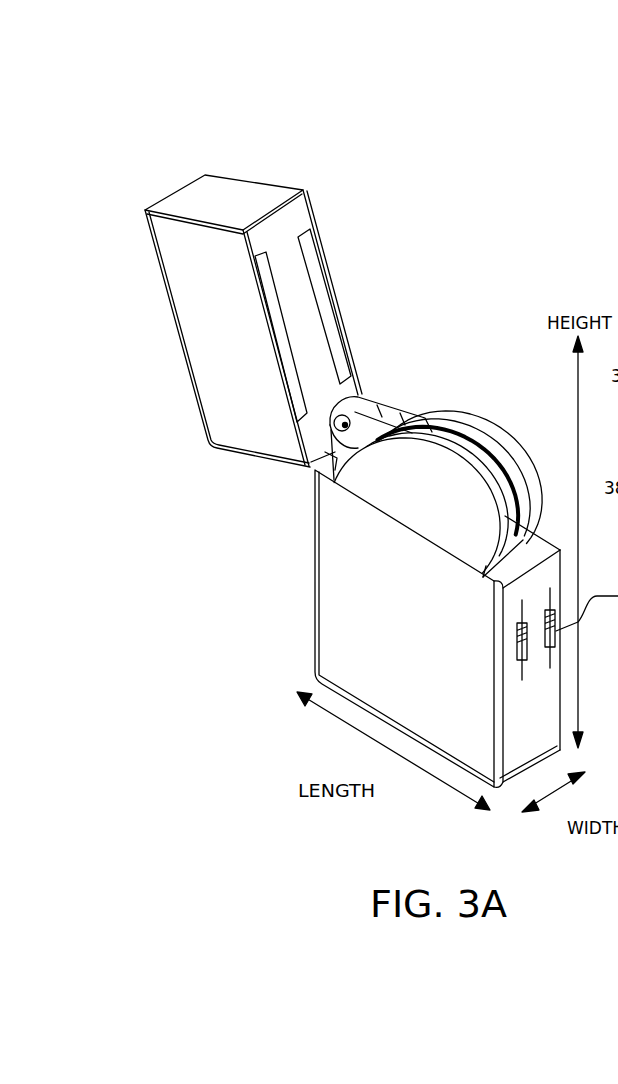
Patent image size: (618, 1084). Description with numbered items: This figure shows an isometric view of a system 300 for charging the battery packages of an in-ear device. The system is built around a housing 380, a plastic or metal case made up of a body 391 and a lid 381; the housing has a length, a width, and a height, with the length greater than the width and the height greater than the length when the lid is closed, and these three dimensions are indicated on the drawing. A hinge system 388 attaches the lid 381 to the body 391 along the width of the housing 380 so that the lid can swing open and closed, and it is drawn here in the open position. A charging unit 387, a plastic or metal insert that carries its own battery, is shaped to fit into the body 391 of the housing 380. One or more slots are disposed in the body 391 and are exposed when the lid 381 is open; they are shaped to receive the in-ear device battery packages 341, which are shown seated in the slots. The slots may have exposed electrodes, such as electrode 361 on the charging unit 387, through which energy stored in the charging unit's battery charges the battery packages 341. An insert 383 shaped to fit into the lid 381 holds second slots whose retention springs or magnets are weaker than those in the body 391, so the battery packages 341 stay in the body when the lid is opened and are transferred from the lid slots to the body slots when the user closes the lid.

The system 300 is at (326, 100).
The housing 380 is at (205, 176).
The lid 381 is at (245, 197).
The insert 383 is at (298, 216).
The battery package 341 is at (447, 412).
The electrode 361 is at (453, 440).
The charging unit 387 is at (539, 546).
The hinge system 388 is at (332, 462).
The body 391 is at (327, 608).